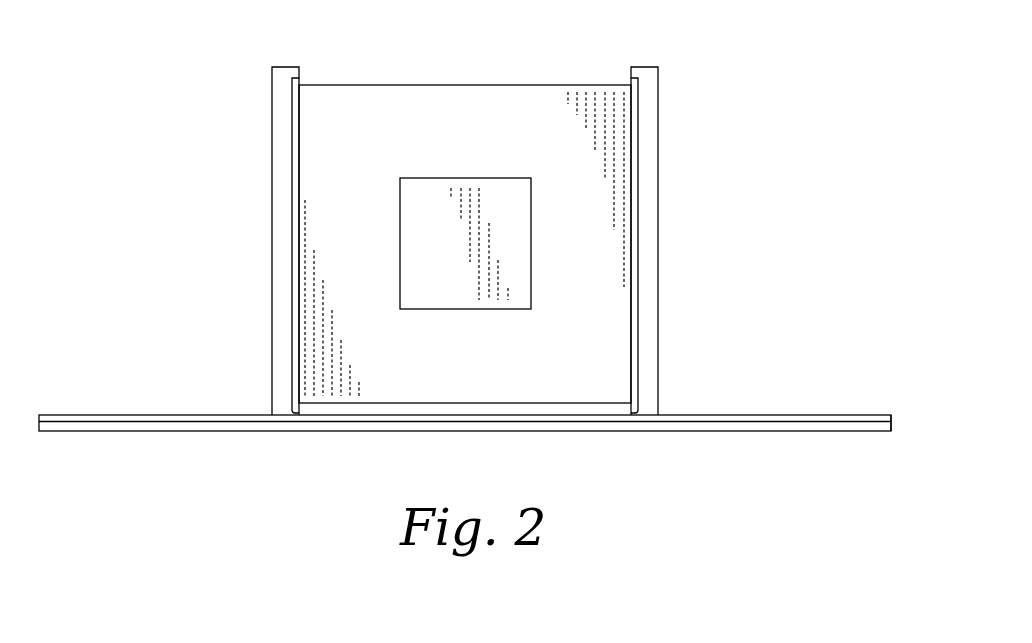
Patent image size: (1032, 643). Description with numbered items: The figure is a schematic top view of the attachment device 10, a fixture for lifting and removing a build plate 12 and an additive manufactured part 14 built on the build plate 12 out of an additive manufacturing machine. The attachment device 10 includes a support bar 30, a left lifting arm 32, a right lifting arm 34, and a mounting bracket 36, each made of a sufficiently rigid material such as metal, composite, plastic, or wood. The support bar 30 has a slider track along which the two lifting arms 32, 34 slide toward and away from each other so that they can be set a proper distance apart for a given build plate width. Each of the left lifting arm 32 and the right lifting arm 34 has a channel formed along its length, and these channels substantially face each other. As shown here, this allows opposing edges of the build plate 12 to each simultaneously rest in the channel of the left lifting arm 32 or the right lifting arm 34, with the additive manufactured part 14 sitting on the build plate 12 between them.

The attachment device 10 is at (678, 480).
The build plate 12 is at (522, 97).
The additive manufactured part 14 is at (420, 187).
The support bar 30 is at (690, 415).
The left lifting arm 32 is at (277, 173).
The right lifting arm 34 is at (653, 153).
The mounting bracket 36 is at (893, 430).